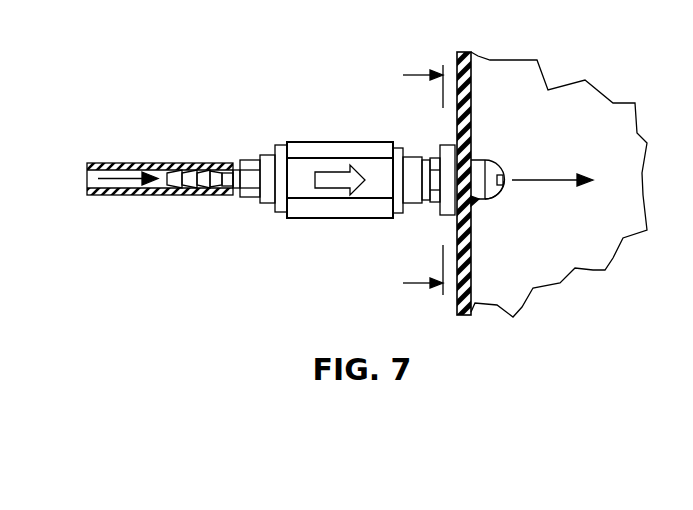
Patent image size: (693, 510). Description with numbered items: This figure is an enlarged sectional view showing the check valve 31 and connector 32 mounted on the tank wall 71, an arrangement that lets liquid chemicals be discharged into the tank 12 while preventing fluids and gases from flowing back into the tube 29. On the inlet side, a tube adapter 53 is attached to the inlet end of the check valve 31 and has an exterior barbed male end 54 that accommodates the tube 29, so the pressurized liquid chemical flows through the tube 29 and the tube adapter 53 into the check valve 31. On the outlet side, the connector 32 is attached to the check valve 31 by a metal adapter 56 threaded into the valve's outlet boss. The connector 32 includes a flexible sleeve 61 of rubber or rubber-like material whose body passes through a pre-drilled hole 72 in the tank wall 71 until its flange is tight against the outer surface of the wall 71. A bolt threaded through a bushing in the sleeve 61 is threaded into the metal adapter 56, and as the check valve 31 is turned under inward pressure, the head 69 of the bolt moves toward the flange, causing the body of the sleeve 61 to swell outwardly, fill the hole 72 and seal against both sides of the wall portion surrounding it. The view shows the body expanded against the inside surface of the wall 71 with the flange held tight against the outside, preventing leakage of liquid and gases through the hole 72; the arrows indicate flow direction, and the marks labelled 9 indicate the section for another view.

The wall thickness dimension 9 is at (414, 180).
The tank 12 is at (510, 75).
The tube 29 is at (143, 195).
The check valve 31 is at (300, 113).
The connector 32 is at (414, 230).
The tube adapter 53 is at (252, 185).
The barbed male end 54 is at (202, 173).
The metal adapter 56 is at (428, 158).
The flexible sleeve 61 is at (480, 170).
The head 69 is at (497, 195).
The tank wall 71 is at (455, 58).
The pre-drilled hole 72 is at (472, 202).